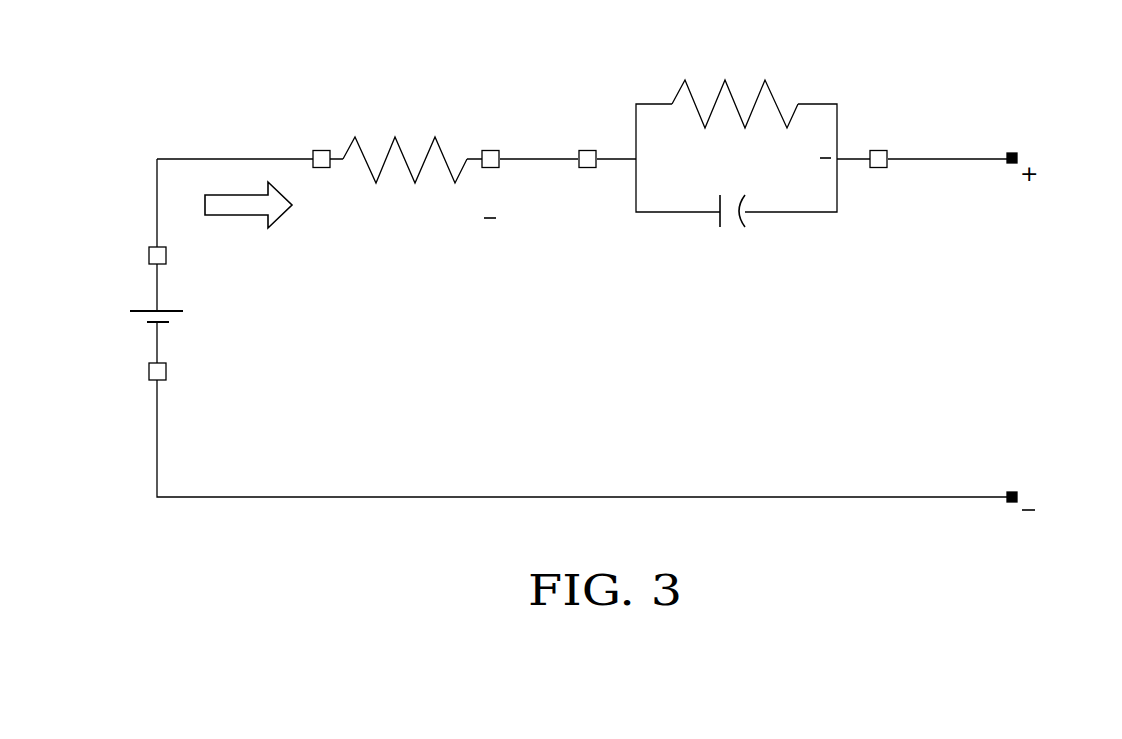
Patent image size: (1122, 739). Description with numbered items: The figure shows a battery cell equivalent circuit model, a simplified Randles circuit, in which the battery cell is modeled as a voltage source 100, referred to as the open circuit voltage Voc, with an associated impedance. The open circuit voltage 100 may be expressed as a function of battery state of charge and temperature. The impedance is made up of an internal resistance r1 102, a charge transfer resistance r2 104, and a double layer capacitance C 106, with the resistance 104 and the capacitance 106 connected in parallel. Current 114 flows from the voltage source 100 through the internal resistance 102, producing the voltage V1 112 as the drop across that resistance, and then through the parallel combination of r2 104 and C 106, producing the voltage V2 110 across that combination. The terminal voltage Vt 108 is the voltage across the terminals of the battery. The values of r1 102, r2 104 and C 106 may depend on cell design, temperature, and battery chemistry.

The voltage source 100 is at (170, 310).
The internal resistance 102 is at (347, 150).
The charge transfer resistance 104 is at (777, 102).
The double layer capacitance 106 is at (717, 218).
The terminal voltage 108 is at (1029, 365).
The voltage V2 110 is at (716, 157).
The voltage V1 112 is at (397, 240).
The current 114 is at (218, 120).